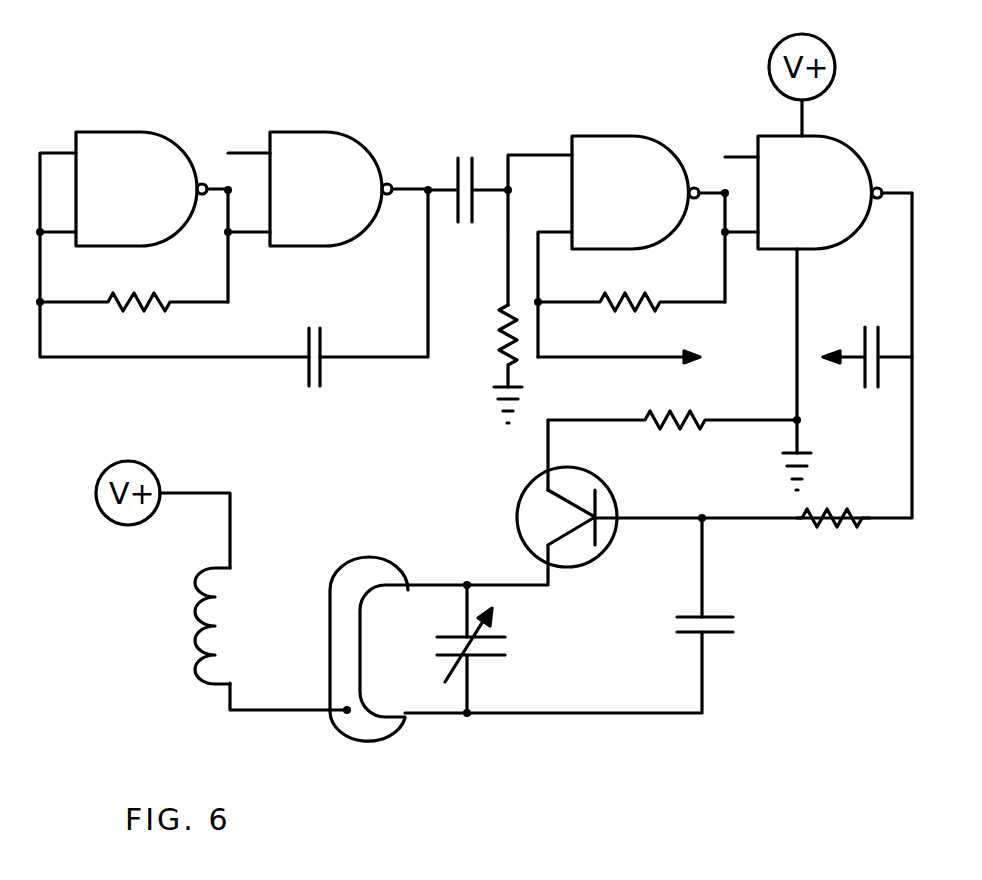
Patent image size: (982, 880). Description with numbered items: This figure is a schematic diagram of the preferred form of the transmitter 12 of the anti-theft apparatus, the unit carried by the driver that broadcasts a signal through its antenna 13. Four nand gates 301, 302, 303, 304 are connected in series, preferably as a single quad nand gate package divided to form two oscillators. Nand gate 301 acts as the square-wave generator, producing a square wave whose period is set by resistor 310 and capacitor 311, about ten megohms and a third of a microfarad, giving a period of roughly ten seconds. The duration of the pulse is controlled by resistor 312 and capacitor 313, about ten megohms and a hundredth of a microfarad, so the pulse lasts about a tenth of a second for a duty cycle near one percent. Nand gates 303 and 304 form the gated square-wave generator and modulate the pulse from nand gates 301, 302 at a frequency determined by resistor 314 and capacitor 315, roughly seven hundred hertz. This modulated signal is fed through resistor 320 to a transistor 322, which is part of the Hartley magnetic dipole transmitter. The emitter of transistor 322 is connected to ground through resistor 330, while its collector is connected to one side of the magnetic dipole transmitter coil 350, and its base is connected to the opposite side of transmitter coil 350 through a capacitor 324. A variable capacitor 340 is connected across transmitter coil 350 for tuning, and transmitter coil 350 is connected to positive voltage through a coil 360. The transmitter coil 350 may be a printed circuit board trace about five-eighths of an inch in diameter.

The transmitter 12 is at (487, 77).
The antenna 13 is at (380, 565).
The nand gate 301 is at (138, 130).
The nand gate 302 is at (343, 130).
The nand gate 303 is at (633, 134).
The nand gate 304 is at (818, 134).
The resistor 310 is at (130, 300).
The capacitor 311 is at (303, 345).
The resistor 312 is at (505, 348).
The capacitor 313 is at (478, 150).
The resistor 314 is at (655, 305).
The capacitor 315 is at (860, 340).
The resistor 320 is at (808, 522).
The transistor 322 is at (567, 567).
The capacitor 324 is at (715, 636).
The resistor 330 is at (665, 425).
The variable capacitor 340 is at (500, 656).
The magnetic dipole transmitter coil 350 is at (330, 583).
The coil 360 is at (192, 645).